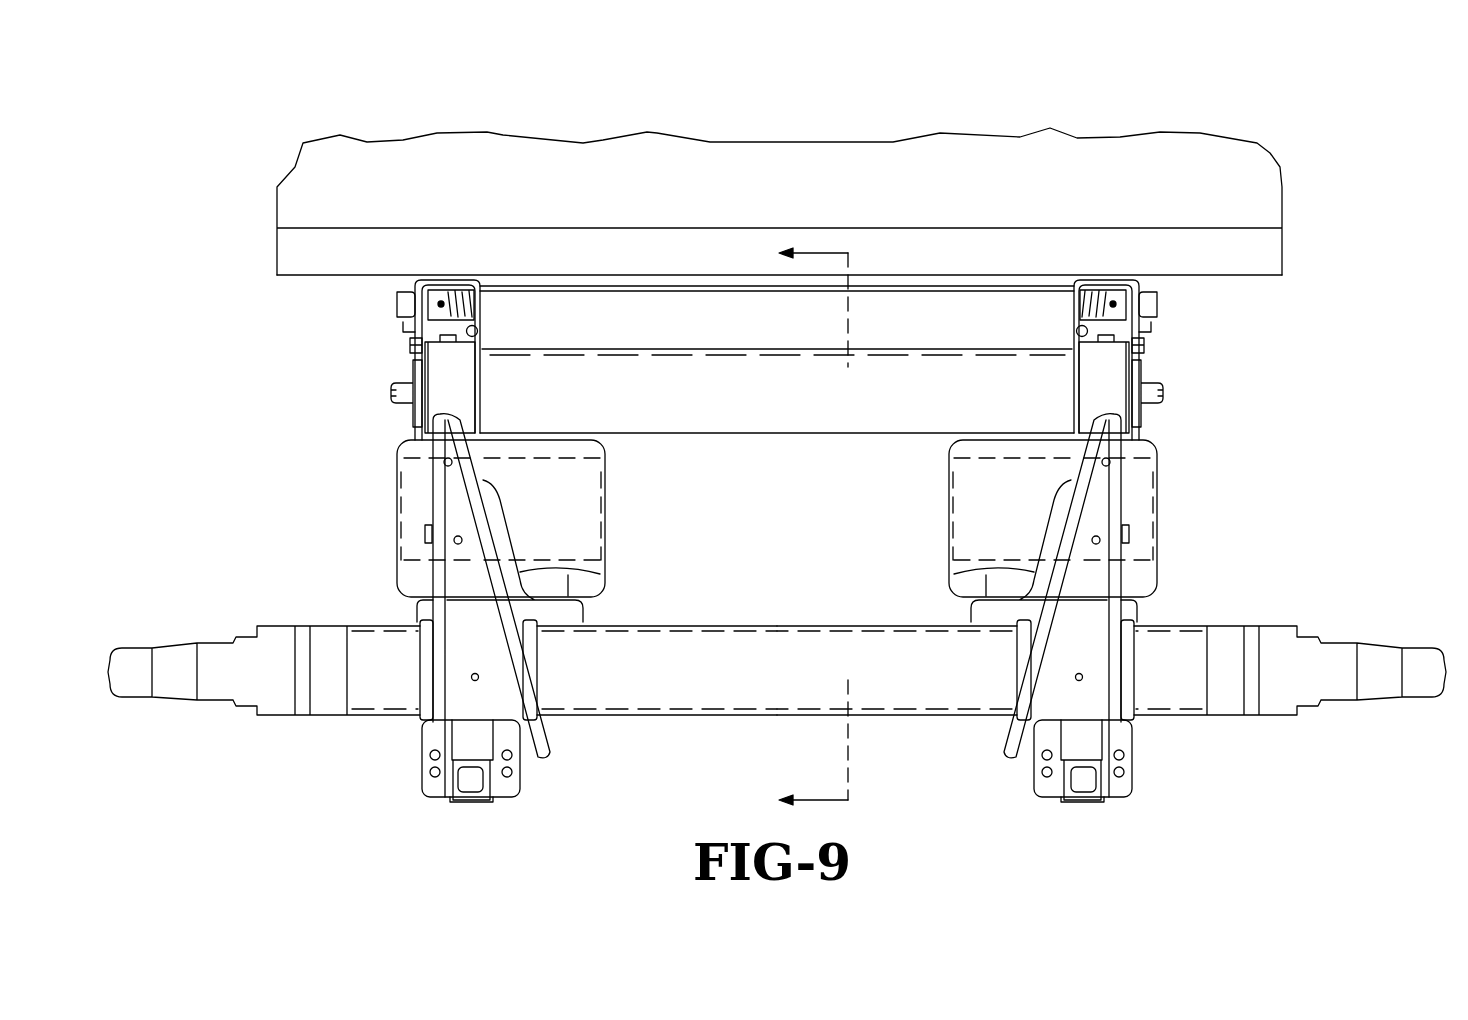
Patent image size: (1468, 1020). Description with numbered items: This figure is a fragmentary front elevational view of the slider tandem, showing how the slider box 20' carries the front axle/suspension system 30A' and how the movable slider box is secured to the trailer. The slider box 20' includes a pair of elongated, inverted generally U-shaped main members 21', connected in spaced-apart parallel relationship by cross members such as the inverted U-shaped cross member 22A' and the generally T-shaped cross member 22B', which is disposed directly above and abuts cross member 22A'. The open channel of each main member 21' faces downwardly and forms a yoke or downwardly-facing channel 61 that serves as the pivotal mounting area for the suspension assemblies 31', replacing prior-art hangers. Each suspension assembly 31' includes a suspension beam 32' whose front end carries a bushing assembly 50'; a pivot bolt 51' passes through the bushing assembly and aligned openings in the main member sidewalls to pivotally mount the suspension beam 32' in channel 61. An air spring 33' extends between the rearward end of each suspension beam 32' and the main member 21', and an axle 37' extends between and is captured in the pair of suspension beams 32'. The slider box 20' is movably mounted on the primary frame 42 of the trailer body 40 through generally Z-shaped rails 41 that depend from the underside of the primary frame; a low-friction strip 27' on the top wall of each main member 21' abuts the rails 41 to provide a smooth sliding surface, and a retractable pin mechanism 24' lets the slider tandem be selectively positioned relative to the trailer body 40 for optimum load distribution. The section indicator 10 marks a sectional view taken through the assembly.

The slider box 20' is at (983, 64).
The trailer body 40 is at (1274, 144).
The primary frame 42 is at (1257, 277).
The rails 41 is at (417, 276).
The main member 21' is at (777, 302).
The low-friction strip 27' is at (777, 252).
The cross member 22B' is at (777, 271).
The cross member 22A' is at (777, 475).
The downwardly-facing channel 61 is at (480, 332).
The retractable pin mechanism 24' is at (838, 318).
The pivot bolt 51' is at (775, 392).
The bushing assembly 50' is at (780, 386).
The air spring 33' is at (777, 531).
The axle 37' is at (777, 649).
The suspension assembly 31' is at (777, 643).
The suspension beam 32' is at (776, 716).
The front axle/suspension system 30A' is at (777, 700).
The section line 10 is at (789, 529).